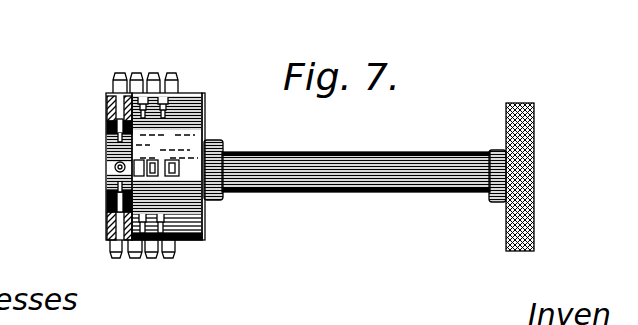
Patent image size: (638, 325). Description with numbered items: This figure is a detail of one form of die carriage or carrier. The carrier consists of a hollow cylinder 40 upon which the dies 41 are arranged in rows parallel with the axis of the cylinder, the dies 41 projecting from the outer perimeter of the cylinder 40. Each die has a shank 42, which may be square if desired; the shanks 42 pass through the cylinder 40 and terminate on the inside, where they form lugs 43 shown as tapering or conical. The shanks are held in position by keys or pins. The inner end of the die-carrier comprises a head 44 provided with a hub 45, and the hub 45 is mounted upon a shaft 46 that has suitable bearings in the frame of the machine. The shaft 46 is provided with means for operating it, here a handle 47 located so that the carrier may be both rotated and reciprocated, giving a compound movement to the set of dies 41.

The hollow cylinder 40 is at (189, 99).
The dies 41 is at (173, 74).
The shanks 42 is at (122, 107).
The lugs 43 is at (107, 128).
The head 44 is at (200, 116).
The hub 45 is at (213, 138).
The shaft 46 is at (334, 163).
The handle 47 is at (507, 120).